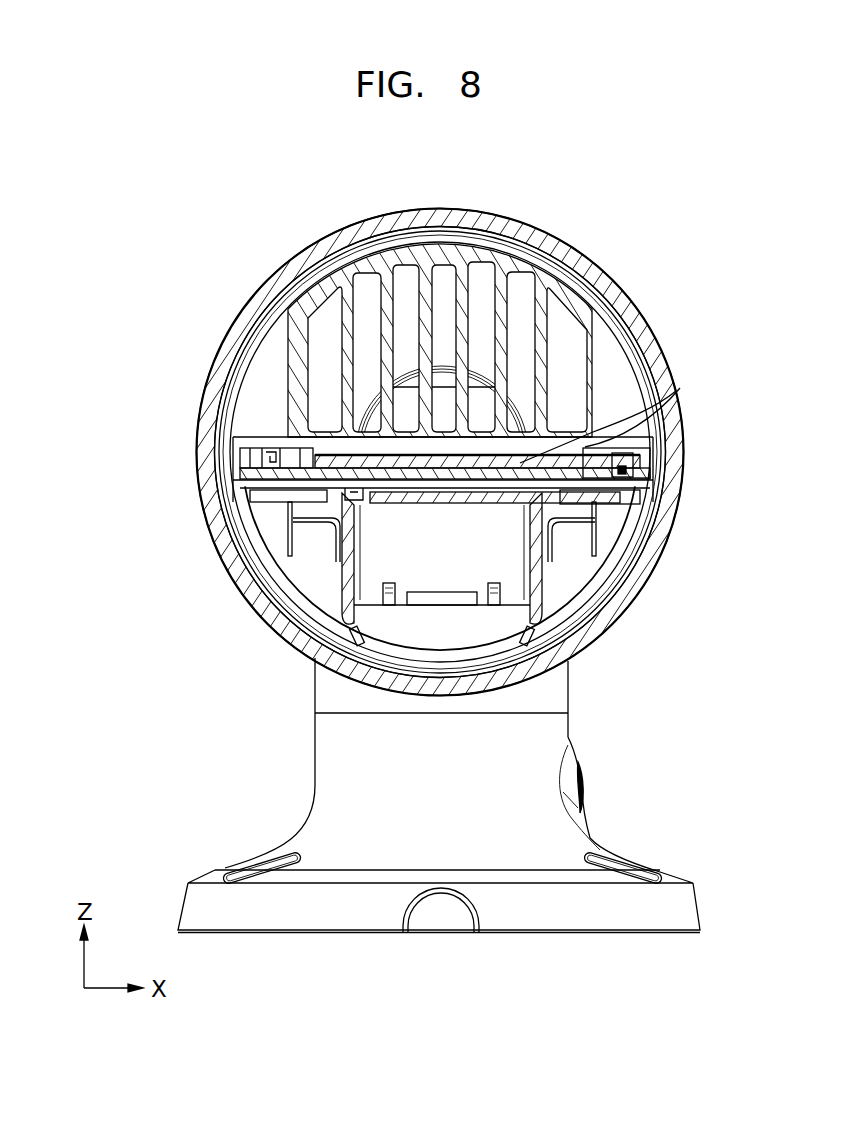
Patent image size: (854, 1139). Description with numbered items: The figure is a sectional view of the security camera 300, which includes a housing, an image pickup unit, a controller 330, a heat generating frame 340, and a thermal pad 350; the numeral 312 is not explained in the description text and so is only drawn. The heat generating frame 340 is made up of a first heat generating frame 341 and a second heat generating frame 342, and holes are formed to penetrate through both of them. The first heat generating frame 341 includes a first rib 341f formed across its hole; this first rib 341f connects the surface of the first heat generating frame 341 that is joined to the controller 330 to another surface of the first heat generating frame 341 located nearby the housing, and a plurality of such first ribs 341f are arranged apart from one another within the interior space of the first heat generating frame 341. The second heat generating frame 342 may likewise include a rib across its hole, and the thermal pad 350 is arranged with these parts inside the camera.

The security camera 300 is at (133, 198).
The outer housing shell 312 is at (250, 322).
The controller 330 is at (662, 470).
The heat generating frame 340 is at (132, 394).
The first heat generating frame 341 is at (252, 410).
The first rib 341f is at (541, 318).
The second heat generating frame 342 is at (350, 541).
The thermal pad 350 is at (677, 392).